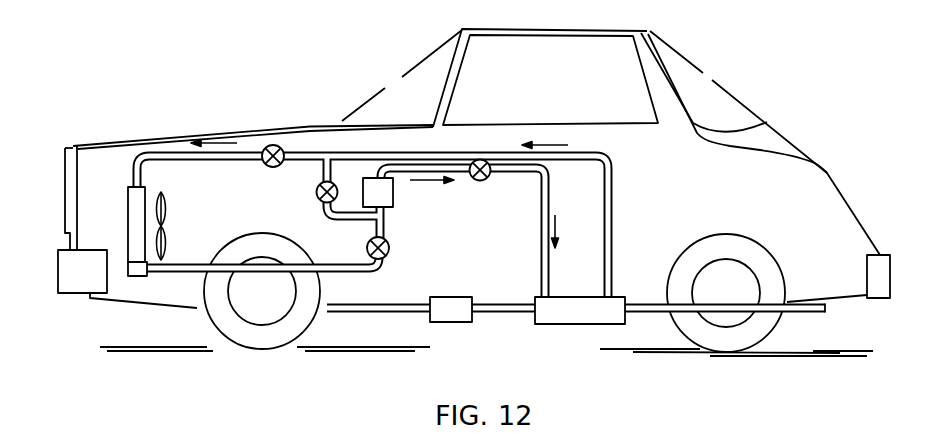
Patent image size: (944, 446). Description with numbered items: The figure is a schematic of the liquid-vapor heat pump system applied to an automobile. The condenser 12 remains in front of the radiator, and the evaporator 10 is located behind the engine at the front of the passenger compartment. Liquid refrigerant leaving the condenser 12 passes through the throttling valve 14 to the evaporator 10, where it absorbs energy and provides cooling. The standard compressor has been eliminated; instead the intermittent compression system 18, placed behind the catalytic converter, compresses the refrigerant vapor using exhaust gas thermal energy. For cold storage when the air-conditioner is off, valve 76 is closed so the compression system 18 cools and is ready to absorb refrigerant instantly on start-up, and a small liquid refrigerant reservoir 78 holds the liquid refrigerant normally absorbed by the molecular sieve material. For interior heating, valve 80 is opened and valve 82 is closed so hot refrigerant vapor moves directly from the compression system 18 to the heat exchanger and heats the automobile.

The evaporator 10 is at (134, 209).
The condenser 12 is at (386, 200).
The throttling valve 14 is at (390, 250).
The compression system 18 is at (580, 311).
The valve 76 is at (478, 182).
The liquid refrigerant reservoir 78 is at (139, 276).
The valve 80 is at (316, 193).
The valve 82 is at (280, 150).